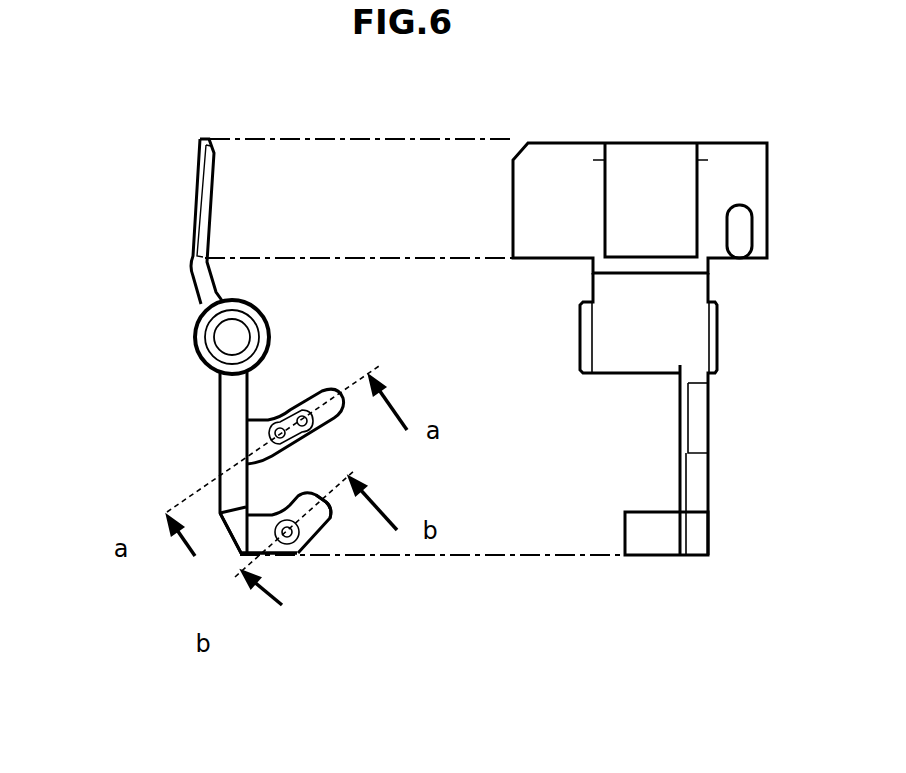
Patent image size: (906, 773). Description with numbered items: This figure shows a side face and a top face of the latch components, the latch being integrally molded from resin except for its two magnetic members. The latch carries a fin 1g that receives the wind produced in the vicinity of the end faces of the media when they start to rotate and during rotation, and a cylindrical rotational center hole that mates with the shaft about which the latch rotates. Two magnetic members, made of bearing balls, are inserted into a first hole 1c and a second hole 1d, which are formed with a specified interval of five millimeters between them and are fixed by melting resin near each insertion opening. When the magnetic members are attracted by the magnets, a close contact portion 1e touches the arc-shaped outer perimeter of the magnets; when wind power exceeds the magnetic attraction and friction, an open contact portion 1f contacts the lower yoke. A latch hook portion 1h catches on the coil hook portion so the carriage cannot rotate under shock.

The first hole 1c is at (303, 397).
The second hole 1d is at (305, 535).
The close contact portion 1e is at (325, 500).
The open contact portion 1f is at (748, 234).
The fin 1g is at (194, 202).
The latch hook portion 1h is at (645, 530).